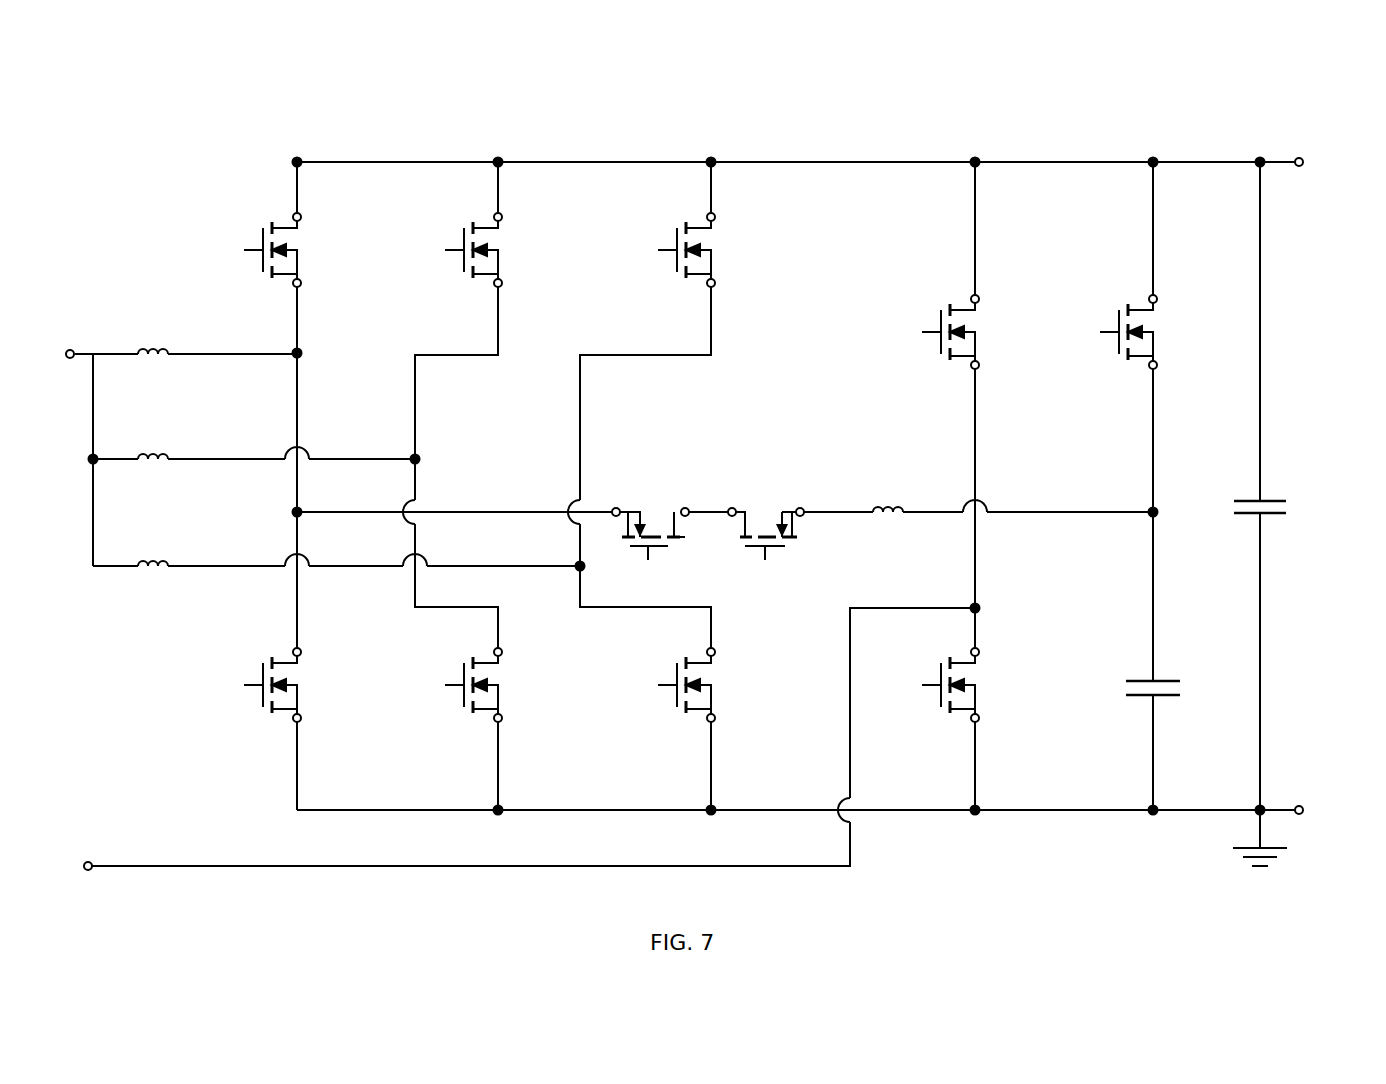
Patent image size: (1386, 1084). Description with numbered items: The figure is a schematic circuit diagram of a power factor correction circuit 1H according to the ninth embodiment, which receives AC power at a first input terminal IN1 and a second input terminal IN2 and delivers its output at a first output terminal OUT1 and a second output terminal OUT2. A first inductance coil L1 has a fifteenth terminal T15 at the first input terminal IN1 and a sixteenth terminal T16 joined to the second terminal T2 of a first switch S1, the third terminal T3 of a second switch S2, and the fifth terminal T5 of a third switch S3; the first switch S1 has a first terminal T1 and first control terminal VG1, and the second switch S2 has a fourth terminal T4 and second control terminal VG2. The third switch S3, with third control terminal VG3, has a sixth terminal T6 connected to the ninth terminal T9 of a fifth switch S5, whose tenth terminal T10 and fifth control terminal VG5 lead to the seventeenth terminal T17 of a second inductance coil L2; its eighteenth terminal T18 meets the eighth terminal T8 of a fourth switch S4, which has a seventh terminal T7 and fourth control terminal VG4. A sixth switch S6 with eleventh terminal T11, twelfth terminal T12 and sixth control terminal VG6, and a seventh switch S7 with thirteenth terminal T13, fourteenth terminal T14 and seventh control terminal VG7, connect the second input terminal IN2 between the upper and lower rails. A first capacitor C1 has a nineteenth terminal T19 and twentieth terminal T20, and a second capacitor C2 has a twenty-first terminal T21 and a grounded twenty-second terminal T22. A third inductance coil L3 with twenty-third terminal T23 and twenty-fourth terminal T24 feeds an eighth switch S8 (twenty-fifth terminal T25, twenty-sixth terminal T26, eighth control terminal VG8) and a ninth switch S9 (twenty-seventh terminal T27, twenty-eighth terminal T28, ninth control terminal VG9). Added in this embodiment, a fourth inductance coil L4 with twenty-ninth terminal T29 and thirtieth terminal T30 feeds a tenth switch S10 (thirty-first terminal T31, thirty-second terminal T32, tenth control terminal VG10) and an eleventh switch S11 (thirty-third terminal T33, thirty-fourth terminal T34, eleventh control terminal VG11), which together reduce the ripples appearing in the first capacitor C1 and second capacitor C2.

The power factor correction circuit 1H is at (118, 138).
The first input terminal IN1 is at (47, 356).
The second input terminal IN2 is at (63, 868).
The first output terminal OUT1 is at (1334, 164).
The second output terminal OUT2 is at (1334, 812).
The first switch S1 is at (287, 250).
The second switch S2 is at (287, 685).
The third switch S3 is at (650, 516).
The fourth switch S4 is at (1143, 332).
The fifth switch S5 is at (766, 516).
The sixth switch S6 is at (965, 332).
The seventh switch S7 is at (965, 685).
The eighth switch S8 is at (488, 250).
The ninth switch S9 is at (488, 685).
The tenth switch S10 is at (708, 250).
The eleventh switch S11 is at (708, 685).
The first inductance coil L1 is at (153, 338).
The second inductance coil L2 is at (888, 528).
The third inductance coil L3 is at (153, 443).
The fourth inductance coil L4 is at (153, 549).
The first capacitor C1 is at (1136, 694).
The second capacitor C2 is at (1240, 514).
The first control terminal VG1 is at (244, 250).
The second control terminal VG2 is at (244, 685).
The third control terminal VG3 is at (648, 560).
The fourth control terminal VG4 is at (1100, 332).
The fifth control terminal VG5 is at (765, 560).
The sixth control terminal VG6 is at (922, 332).
The seventh control terminal VG7 is at (922, 685).
The eighth control terminal VG8 is at (445, 250).
The ninth control terminal VG9 is at (445, 685).
The tenth control terminal VG10 is at (658, 250).
The eleventh control terminal VG11 is at (658, 685).
The first terminal T1 is at (302, 217).
The second terminal T2 is at (302, 283).
The third terminal T3 is at (302, 652).
The fourth terminal T4 is at (302, 718).
The fifth terminal T5 is at (615, 507).
The sixth terminal T6 is at (685, 507).
The seventh terminal T7 is at (1158, 299).
The eighth terminal T8 is at (1158, 365).
The ninth terminal T9 is at (732, 507).
The tenth terminal T10 is at (800, 507).
The eleventh terminal T11 is at (980, 299).
The twelfth terminal T12 is at (980, 365).
The thirteenth terminal T13 is at (980, 652).
The fourteenth terminal T14 is at (980, 718).
The fifteenth terminal T15 is at (138, 352).
The sixteenth terminal T16 is at (168, 352).
The seventeenth terminal T17 is at (873, 510).
The eighteenth terminal T18 is at (903, 510).
The nineteenth terminal T19 is at (1158, 677).
The twentieth terminal T20 is at (1158, 699).
The twenty-first terminal T21 is at (1265, 497).
The twenty-second terminal T22 is at (1265, 517).
The twenty-third terminal T23 is at (138, 457).
The twenty-fourth terminal T24 is at (168, 457).
The twenty-fifth terminal T25 is at (503, 217).
The twenty-sixth terminal T26 is at (503, 283).
The twenty-seventh terminal T27 is at (503, 652).
The twenty-eighth terminal T28 is at (503, 718).
The twenty-ninth terminal T29 is at (138, 564).
The thirtieth terminal T30 is at (168, 564).
The thirty-first terminal T31 is at (716, 217).
The thirty-second terminal T32 is at (716, 283).
The thirty-third terminal T33 is at (716, 652).
The thirty-fourth terminal T34 is at (716, 718).